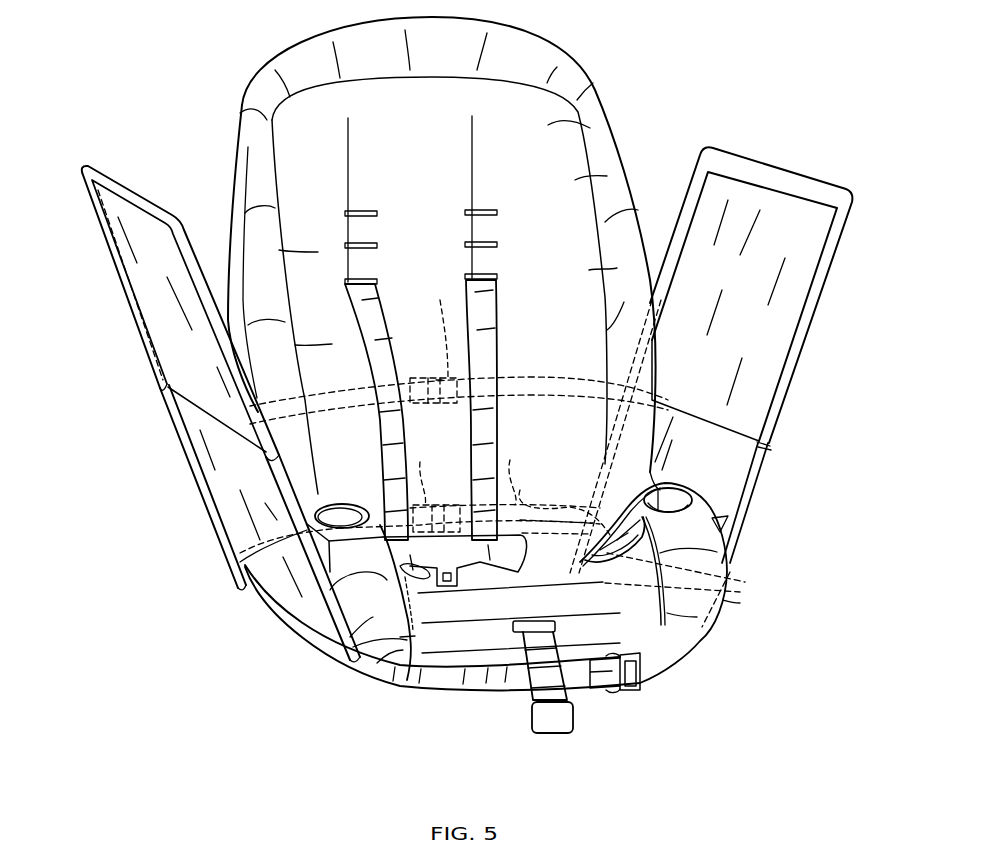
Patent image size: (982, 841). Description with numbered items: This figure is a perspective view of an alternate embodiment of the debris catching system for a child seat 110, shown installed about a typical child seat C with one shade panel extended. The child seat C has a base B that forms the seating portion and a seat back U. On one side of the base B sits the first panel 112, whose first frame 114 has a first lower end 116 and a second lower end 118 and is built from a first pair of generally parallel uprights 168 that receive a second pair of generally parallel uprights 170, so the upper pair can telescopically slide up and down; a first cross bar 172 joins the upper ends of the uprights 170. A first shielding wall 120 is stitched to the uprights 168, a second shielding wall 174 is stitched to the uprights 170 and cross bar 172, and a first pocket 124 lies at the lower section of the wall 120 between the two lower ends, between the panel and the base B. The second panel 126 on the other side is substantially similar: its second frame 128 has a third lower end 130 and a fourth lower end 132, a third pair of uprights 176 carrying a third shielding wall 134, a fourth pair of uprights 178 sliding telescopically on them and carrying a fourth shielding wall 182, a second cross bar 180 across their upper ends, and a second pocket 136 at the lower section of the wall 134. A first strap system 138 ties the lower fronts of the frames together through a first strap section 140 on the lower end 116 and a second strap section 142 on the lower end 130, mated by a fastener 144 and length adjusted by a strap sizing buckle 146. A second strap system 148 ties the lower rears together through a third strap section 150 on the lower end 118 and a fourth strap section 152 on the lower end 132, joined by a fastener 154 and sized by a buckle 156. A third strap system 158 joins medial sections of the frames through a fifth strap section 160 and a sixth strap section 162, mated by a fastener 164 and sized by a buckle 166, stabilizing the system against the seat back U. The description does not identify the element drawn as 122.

The debris catching system for a child seat 110 is at (178, 655).
The child seat C is at (552, 46).
The seat back U is at (590, 72).
The base B is at (625, 620).
The first panel 112 is at (160, 374).
The first frame 114 is at (210, 519).
The first lower end 116 is at (350, 672).
The second lower end 118 is at (238, 585).
The first shielding wall 120 is at (238, 525).
The seat pan plate 122 is at (455, 560).
The first pocket 124 is at (353, 572).
The second panel 126 is at (815, 352).
The second frame 128 is at (790, 412).
The third lower end 130 is at (720, 600).
The fourth lower end 132 is at (623, 549).
The third shielding wall 134 is at (730, 477).
The second pocket 136 is at (740, 527).
The first strap system 138 is at (457, 688).
The first strap section 140 is at (490, 682).
The second strap section 142 is at (680, 668).
The fastener 144 is at (612, 692).
The strap sizing buckle 146 is at (632, 692).
The second strap system 148 is at (342, 512).
The third strap section 150 is at (282, 520).
The fourth strap section 152 is at (503, 473).
The fastener 154 is at (420, 474).
The strap sizing buckle 156 is at (450, 505).
The third strap system 158 is at (524, 378).
The fifth strap section 160 is at (332, 390).
The sixth strap section 162 is at (565, 378).
The fastener 164 is at (420, 370).
The strap sizing buckle 166 is at (440, 331).
The first pair of generally parallel uprights 168 is at (240, 458).
The second pair of generally parallel uprights 170 is at (193, 240).
The first cross bar 172 is at (112, 184).
The second shielding wall 174 is at (168, 326).
The third pair of generally parallel uprights 176 is at (615, 430).
The fourth pair of generally parallel uprights 178 is at (692, 195).
The second cross bar 180 is at (804, 183).
The fourth shielding wall 182 is at (753, 220).